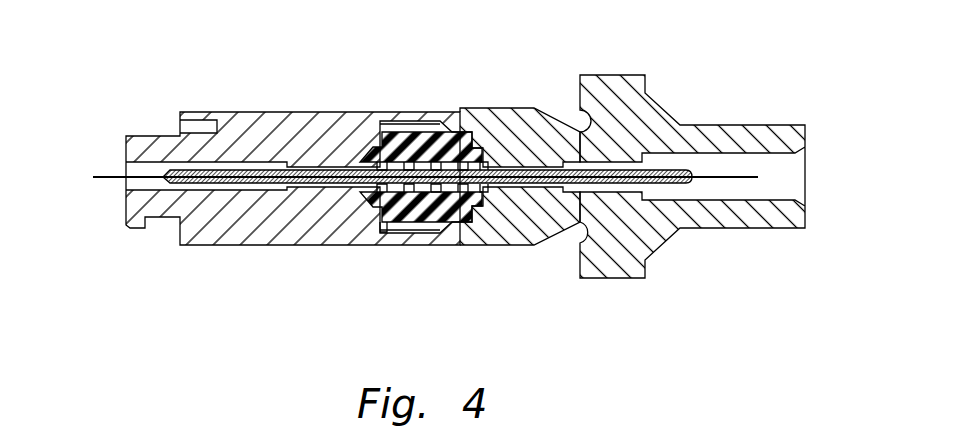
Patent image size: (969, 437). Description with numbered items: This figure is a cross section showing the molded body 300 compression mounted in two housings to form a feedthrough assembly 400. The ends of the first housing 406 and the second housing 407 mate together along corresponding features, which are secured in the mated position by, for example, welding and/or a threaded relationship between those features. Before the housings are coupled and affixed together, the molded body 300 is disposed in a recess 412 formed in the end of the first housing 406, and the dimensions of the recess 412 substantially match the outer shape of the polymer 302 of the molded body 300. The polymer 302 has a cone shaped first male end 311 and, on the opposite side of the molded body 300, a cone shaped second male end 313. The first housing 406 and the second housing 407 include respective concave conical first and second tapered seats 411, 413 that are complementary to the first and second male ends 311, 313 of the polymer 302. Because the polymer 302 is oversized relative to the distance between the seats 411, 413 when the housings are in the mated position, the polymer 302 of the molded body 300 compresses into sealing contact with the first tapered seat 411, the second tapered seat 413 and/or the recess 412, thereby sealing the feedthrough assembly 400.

The feedthrough assembly 400 is at (200, 47).
The second housing 407 is at (272, 110).
The second male end 313 is at (367, 165).
The polymer 302 is at (415, 132).
The first male end 311 is at (491, 158).
The first housing 406 is at (629, 75).
The molded body 300 is at (353, 215).
The second tapered seat 413 is at (394, 206).
The recess 412 is at (440, 214).
The first tapered seat 411 is at (488, 192).